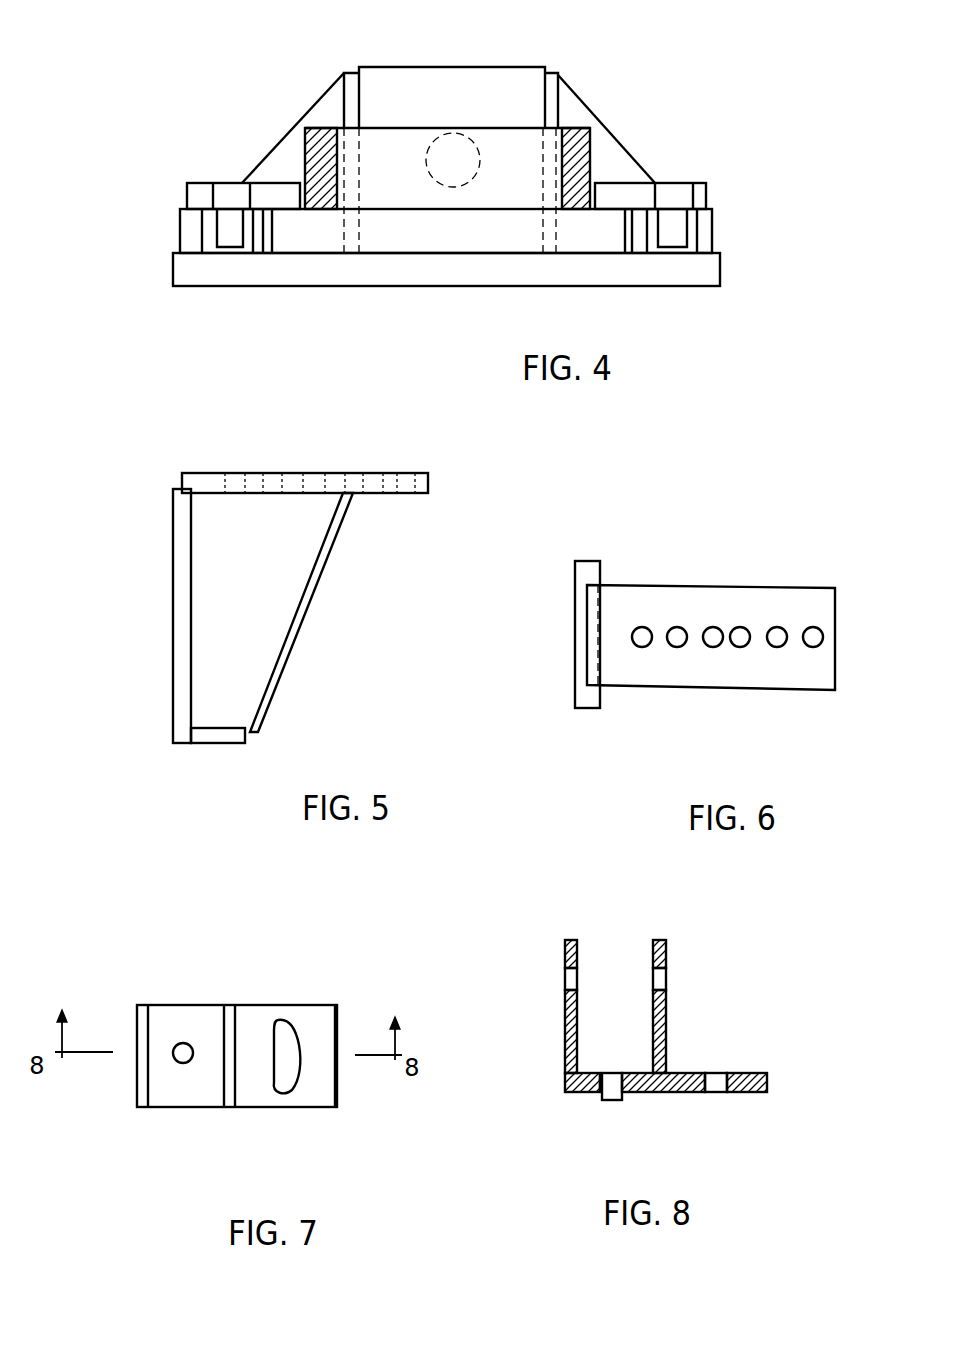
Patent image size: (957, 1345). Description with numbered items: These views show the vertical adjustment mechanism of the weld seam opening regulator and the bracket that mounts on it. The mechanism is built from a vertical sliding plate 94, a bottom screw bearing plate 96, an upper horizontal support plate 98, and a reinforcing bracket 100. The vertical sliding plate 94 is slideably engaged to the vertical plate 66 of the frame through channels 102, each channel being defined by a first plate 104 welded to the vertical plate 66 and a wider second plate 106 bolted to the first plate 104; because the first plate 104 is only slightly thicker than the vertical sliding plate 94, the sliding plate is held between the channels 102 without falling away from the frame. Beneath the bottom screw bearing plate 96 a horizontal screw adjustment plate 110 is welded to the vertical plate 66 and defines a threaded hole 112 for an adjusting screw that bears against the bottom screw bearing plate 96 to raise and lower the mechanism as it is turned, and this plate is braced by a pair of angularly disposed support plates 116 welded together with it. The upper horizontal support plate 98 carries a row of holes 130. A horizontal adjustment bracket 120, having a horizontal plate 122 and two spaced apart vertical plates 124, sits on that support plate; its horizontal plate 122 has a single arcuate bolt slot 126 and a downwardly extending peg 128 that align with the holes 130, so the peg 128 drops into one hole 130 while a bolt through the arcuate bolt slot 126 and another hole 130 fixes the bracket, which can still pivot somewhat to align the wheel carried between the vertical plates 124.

In FIG. 4, the vertical plate 66 is at (190, 275).
In FIG. 4, the vertical sliding plate 94 is at (293, 247).
In FIG. 5, the vertical sliding plate 94 is at (191, 658).
In FIG. 6, the vertical sliding plate 94 is at (592, 698).
In FIG. 4, the bottom screw bearing plate 96 is at (380, 137).
In FIG. 5, the bottom screw bearing plate 96 is at (230, 747).
In FIG. 5, the upper horizontal support plate 98 is at (420, 497).
In FIG. 6, the upper horizontal support plate 98 is at (826, 604).
In FIG. 4, the reinforcing bracket 100 is at (313, 147).
In FIG. 5, the reinforcing bracket 100 is at (282, 658).
In FIG. 4, the channels 102 is at (177, 197).
In FIG. 4, the first plate 104 is at (187, 232).
In FIG. 4, the second plate 106 is at (196, 192).
In FIG. 4, the horizontal screw adjustment plate 110 is at (520, 78).
In FIG. 4, the threaded hole 112 is at (455, 140).
In FIG. 4, the angularly disposed support plates 116 is at (320, 113).
In FIG. 7, the horizontal adjustment bracket 120 is at (207, 1118).
In FIG. 8, the horizontal adjustment bracket 120 is at (683, 1008).
In FIG. 7, the horizontal plate 122 is at (317, 1098).
In FIG. 8, the horizontal plate 122 is at (650, 1092).
In FIG. 7, the vertical plates 124 is at (140, 1018).
In FIG. 8, the vertical plates 124 is at (653, 957).
In FIG. 7, the arcuate bolt slot 126 is at (288, 1040).
In FIG. 8, the arcuate bolt slot 126 is at (720, 1072).
In FIG. 7, the peg 128 is at (178, 1058).
In FIG. 8, the peg 128 is at (611, 1086).
In FIG. 5, the holes 130 is at (253, 466).
In FIG. 6, the holes 130 is at (645, 648).